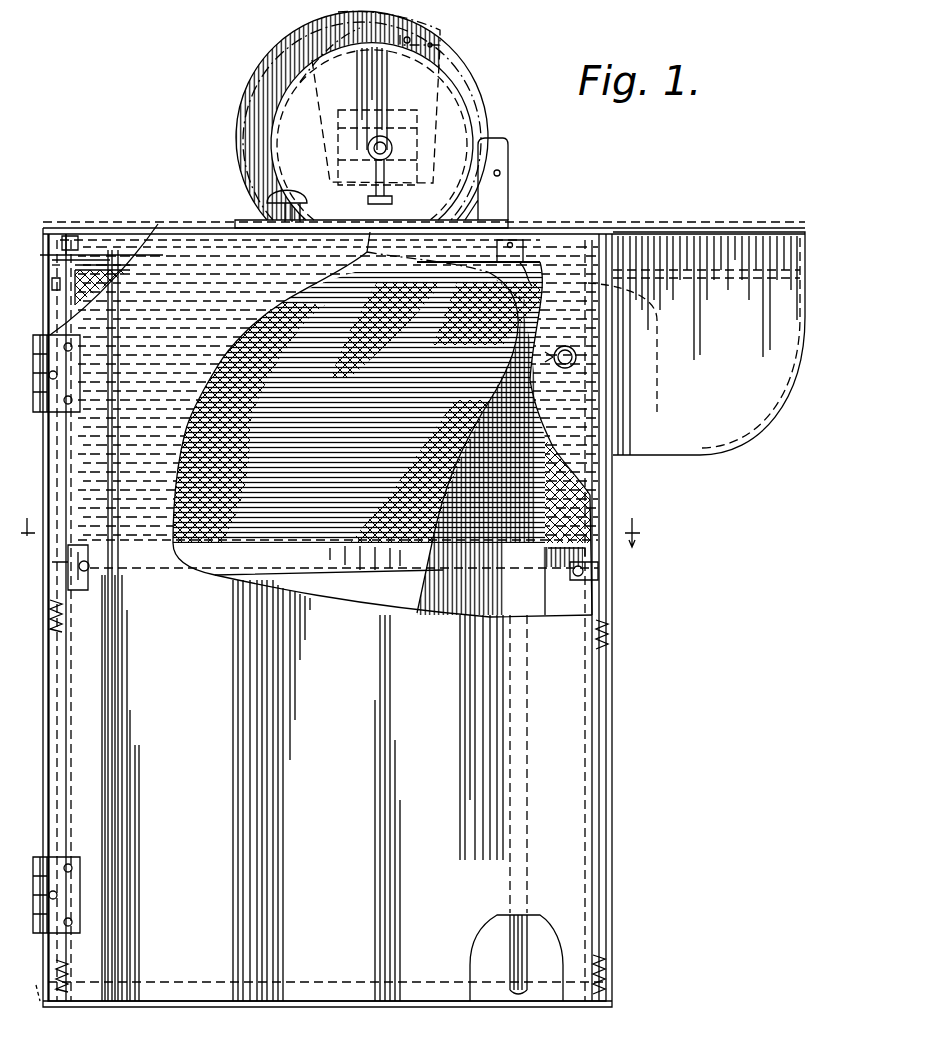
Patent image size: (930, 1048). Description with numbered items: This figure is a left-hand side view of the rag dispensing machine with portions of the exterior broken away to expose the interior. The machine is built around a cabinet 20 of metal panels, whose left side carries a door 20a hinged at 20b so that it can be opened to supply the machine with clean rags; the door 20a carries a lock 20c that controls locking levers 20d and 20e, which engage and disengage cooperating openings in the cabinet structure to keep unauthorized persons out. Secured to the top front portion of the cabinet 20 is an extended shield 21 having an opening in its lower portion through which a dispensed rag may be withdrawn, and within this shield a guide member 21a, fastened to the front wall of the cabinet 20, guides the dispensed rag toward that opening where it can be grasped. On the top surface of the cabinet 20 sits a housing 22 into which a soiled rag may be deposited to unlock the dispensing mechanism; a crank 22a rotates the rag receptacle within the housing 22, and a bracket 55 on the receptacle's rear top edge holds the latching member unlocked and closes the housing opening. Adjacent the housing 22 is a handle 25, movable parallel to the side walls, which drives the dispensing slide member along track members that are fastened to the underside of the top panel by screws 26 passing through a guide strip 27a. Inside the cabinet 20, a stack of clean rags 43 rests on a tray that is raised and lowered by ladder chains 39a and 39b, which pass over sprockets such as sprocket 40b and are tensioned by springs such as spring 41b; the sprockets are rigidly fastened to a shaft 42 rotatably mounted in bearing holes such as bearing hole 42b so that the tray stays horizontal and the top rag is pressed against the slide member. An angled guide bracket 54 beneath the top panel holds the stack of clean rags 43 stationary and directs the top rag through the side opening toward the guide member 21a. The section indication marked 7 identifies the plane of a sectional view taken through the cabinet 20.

The cabinet 20 is at (613, 727).
The door 20a is at (228, 985).
The hinge 20b is at (40, 336).
The lock 20c is at (578, 356).
The locking lever 20d is at (529, 712).
The locking lever 20e is at (582, 345).
The extended shield 21 is at (742, 424).
The guide member 21a is at (662, 378).
The housing 22 is at (244, 112).
The crank 22a is at (300, 80).
The handle 25 is at (272, 195).
The screws 26 is at (103, 227).
The guide strip 27a is at (80, 235).
The ladder chain 39a is at (600, 567).
The ladder chain 39b is at (52, 283).
The sprocket 40b is at (52, 272).
The spring 41b is at (36, 985).
The shaft 42 is at (297, 524).
The bearing hole 42b is at (75, 243).
The clean rags 43 is at (97, 302).
The guide bracket 54 is at (220, 222).
The bracket 55 is at (488, 133).
The section line 7 is at (338, 541).